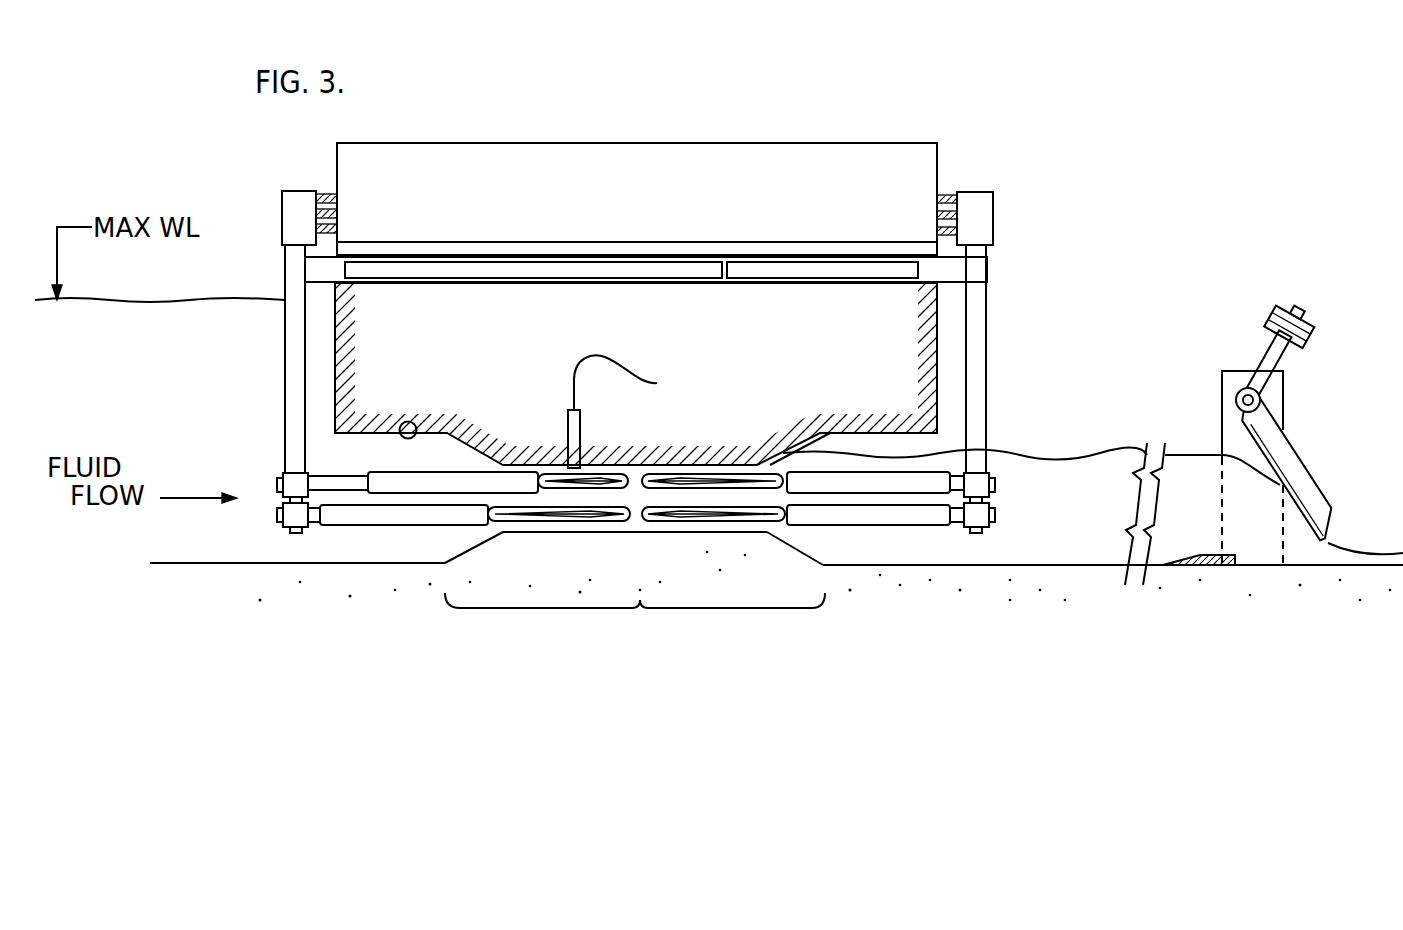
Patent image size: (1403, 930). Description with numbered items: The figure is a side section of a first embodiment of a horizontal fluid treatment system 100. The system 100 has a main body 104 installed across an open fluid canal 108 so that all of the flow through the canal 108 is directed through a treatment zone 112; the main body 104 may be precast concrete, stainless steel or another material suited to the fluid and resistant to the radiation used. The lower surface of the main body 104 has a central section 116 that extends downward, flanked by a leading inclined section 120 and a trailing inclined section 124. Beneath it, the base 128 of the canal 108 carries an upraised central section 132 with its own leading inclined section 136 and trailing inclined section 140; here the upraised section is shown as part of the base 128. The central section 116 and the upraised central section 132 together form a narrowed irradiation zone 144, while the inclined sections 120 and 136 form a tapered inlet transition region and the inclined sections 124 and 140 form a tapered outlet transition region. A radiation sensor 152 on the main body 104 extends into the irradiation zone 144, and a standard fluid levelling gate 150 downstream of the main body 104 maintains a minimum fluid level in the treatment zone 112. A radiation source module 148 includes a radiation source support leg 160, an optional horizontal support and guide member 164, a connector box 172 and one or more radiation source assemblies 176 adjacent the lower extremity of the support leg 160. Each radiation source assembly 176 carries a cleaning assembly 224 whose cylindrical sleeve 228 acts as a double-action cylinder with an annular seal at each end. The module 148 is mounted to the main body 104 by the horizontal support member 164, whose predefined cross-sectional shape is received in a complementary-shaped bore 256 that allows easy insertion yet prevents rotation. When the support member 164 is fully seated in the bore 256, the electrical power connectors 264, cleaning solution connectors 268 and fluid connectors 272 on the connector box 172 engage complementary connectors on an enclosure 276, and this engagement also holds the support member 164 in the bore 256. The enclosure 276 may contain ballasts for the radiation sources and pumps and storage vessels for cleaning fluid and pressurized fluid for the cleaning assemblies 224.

The fluid treatment system 100 is at (1116, 206).
The main body 104 is at (741, 349).
The open fluid canal 108 is at (176, 398).
The treatment zone 112 is at (635, 622).
The central section 116 is at (681, 458).
The leading inclined section 120 is at (408, 422).
The trailing inclined section 124 is at (797, 455).
The base 128 is at (1081, 631).
The upraised central section 132 is at (673, 537).
The leading inclined section 136 is at (478, 546).
The trailing inclined section 140 is at (790, 540).
The irradiation zone 144 is at (637, 500).
The radiation source module 148 is at (285, 272).
The fluid levelling gate 150 is at (1292, 440).
The radiation sensor 152 is at (580, 430).
The radiation source support leg 160 is at (285, 393).
The horizontal support and guide member 164 is at (558, 268).
The connector box 172 is at (290, 192).
The radiation source assembly 176 is at (278, 484).
The cleaning assembly 224 is at (403, 520).
The cylindrical sleeve 228 is at (370, 520).
The bore 256 is at (440, 255).
The electrical power connectors 264 is at (618, 171).
The cleaning solution connectors 268 is at (340, 230).
The fluid connectors 272 is at (338, 200).
The enclosure 276 is at (712, 198).